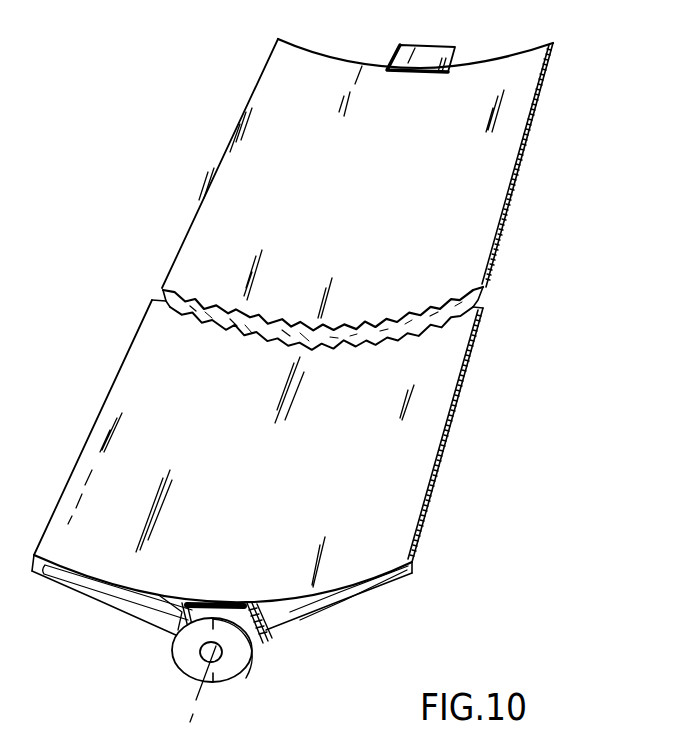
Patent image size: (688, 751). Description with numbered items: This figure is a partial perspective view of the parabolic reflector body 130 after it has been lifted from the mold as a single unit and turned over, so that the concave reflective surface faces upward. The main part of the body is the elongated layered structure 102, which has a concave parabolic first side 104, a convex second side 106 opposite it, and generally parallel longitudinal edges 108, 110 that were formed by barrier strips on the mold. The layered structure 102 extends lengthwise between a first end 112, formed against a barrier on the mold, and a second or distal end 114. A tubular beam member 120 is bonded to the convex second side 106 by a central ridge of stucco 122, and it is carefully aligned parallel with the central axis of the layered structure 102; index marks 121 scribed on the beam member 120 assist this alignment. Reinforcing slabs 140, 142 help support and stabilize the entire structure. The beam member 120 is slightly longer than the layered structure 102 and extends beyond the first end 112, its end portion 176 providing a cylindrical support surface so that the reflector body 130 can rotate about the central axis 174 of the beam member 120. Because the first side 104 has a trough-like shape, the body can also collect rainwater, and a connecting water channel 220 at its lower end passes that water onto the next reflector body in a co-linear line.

The elongated layered structure 102 is at (267, 678).
The concave parabolic first side 104 is at (277, 499).
The convex second side 106 is at (320, 603).
The longitudinal edge 108 is at (110, 395).
The longitudinal edge 110 is at (453, 418).
The first end 112 is at (320, 590).
The second end 114 is at (303, 46).
The beam member 120 is at (385, 322).
The index marks 121 is at (222, 680).
The central ridge of stucco 122 is at (205, 604).
The parabolic reflector body 130 is at (387, 163).
The reinforcing slab 140 is at (115, 597).
The reinforcing slab 142 is at (358, 600).
The central axis 174 is at (207, 688).
The end portion 176 is at (172, 612).
The connecting water channel 220 is at (400, 62).